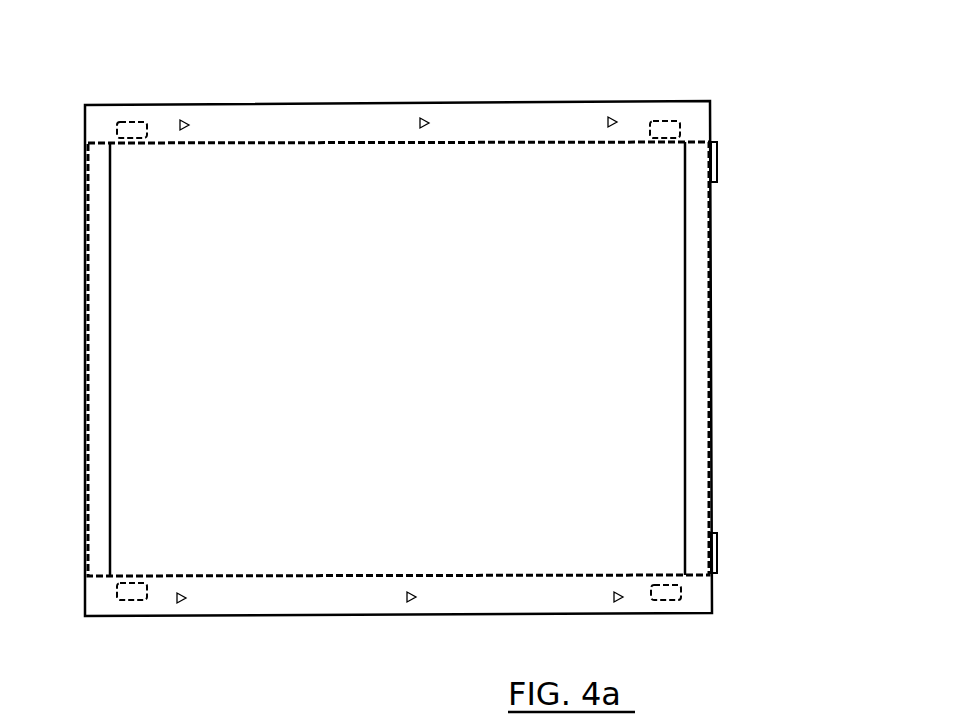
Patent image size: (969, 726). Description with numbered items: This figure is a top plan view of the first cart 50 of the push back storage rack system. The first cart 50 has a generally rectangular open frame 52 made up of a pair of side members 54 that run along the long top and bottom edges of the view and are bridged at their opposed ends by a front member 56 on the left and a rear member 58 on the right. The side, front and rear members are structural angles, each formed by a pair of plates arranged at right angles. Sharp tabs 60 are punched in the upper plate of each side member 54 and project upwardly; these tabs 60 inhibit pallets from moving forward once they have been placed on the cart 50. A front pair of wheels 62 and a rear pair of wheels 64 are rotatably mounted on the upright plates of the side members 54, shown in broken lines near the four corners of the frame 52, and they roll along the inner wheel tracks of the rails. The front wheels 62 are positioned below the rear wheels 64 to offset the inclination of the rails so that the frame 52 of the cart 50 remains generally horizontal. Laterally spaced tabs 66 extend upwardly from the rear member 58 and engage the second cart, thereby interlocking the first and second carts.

The first cart 50 is at (742, 96).
The open frame 52 is at (140, 646).
The side members 54 is at (383, 112).
The front member 56 is at (105, 353).
The rear member 58 is at (697, 350).
The sharp tabs 60 is at (185, 124).
The front wheels 62 is at (142, 128).
The rear wheels 64 is at (665, 124).
The laterally spaced tabs 66 is at (716, 178).